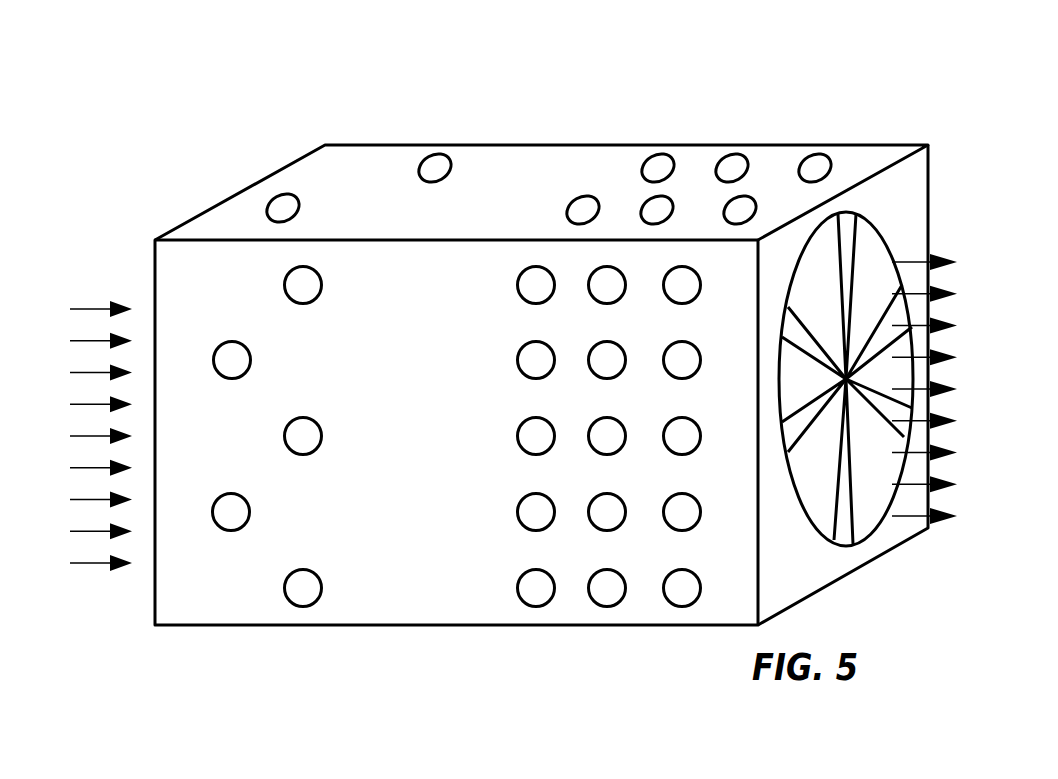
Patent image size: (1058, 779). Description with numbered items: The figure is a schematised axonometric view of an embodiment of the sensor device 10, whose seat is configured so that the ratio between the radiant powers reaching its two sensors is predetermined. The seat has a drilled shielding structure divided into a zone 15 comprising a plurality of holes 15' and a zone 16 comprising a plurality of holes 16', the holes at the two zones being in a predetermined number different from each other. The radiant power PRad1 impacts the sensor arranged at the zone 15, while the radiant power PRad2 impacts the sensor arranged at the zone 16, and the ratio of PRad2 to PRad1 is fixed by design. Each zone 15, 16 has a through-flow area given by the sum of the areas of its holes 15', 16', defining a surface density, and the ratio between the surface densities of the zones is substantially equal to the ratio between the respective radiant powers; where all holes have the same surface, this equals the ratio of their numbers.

The sensor device 10 is at (110, 146).
The zone 15 is at (368, 319).
The holes 15' is at (208, 205).
The zone 16 is at (716, 323).
The holes 16' is at (603, 141).
The radiant power PRad1 is at (362, 182).
The radiant power PRad2 is at (695, 182).